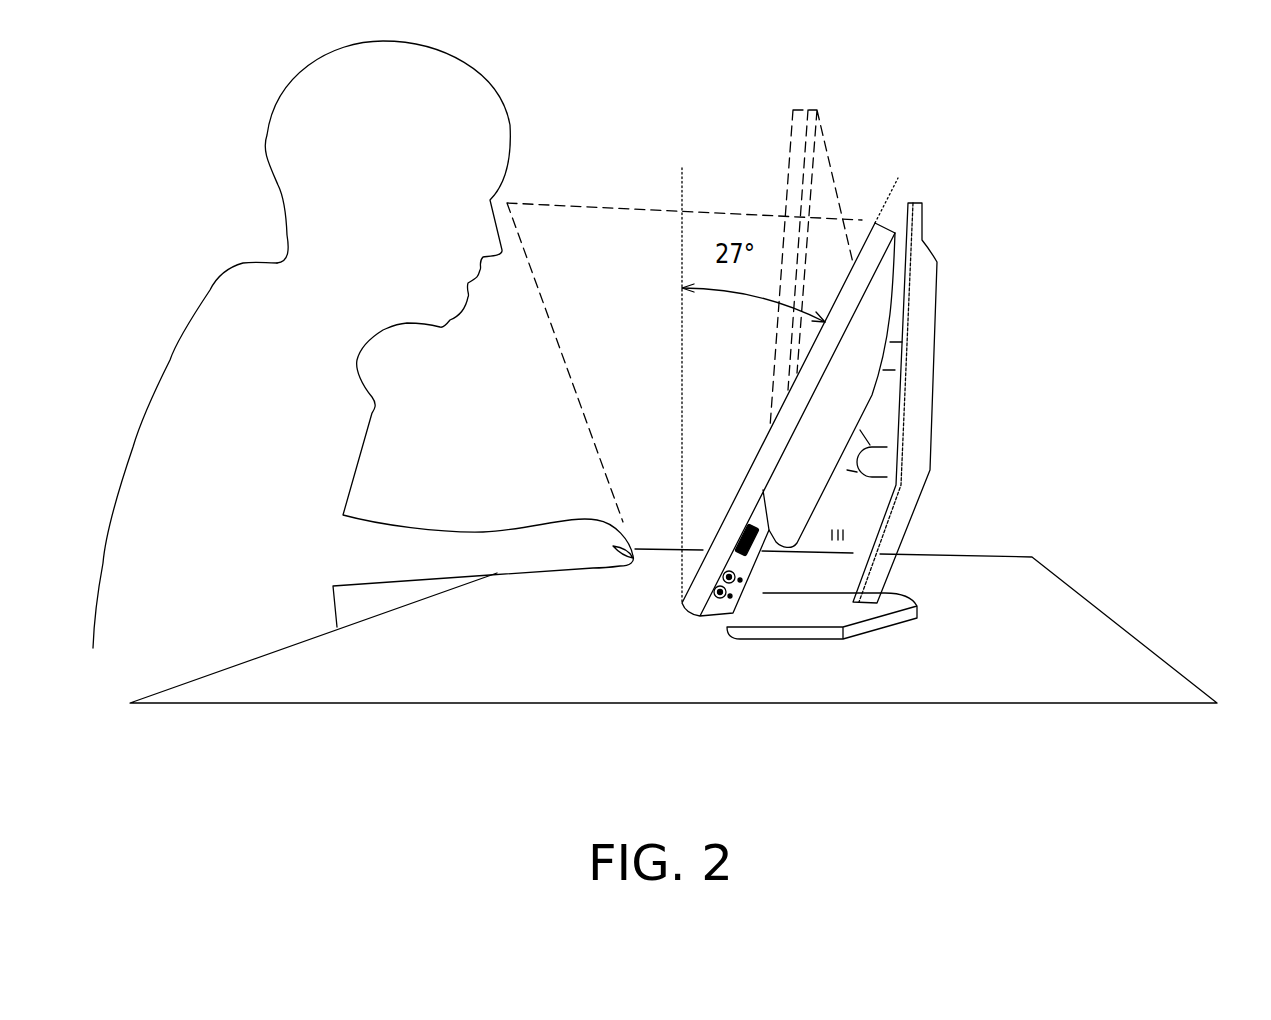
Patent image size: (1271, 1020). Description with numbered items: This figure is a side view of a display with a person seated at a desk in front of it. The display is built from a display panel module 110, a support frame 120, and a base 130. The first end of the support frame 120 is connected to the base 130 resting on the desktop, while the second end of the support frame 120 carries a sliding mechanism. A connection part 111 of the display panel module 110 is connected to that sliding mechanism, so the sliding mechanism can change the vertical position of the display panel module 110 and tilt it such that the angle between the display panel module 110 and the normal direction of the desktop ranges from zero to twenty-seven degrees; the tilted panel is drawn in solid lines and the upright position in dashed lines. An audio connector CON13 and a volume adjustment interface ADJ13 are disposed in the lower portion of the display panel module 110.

The display panel module 110 is at (890, 207).
The connection part 111 is at (857, 478).
The support frame 120 is at (935, 323).
The base 130 is at (902, 602).
The audio connector CON13 is at (738, 578).
The volume adjustment interface ADJ13 is at (757, 540).